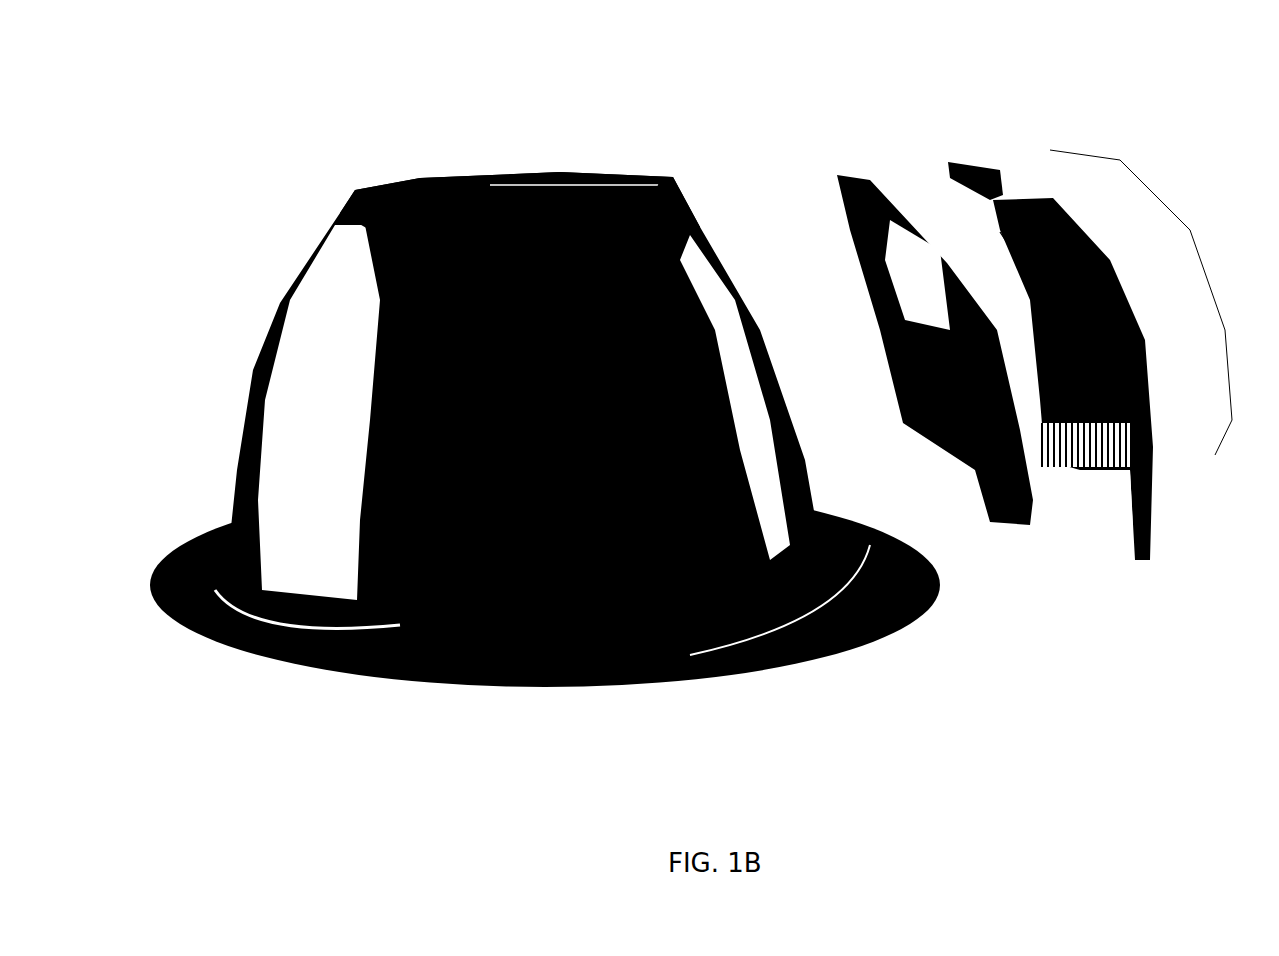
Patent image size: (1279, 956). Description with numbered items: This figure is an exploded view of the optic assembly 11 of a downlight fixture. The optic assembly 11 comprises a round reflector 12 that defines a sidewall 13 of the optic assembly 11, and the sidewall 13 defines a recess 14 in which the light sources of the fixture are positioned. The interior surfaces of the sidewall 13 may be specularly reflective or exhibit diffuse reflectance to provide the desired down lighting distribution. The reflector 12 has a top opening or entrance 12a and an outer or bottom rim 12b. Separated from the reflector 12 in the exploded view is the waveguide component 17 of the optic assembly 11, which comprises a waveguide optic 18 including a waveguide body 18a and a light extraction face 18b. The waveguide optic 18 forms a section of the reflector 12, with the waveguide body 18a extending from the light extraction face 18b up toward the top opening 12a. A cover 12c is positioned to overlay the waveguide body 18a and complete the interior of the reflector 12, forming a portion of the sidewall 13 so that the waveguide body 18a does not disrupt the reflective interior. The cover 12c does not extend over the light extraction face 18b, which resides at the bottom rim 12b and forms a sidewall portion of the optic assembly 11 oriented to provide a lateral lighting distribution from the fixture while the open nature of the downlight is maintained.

The optic assembly 11 is at (440, 96).
The round reflector 12 is at (272, 322).
The top opening or entrance of the reflector 12a is at (418, 186).
The outer or bottom rim of the reflector 12b is at (487, 658).
The cover 12c is at (857, 180).
The sidewall 13 is at (532, 220).
The recess 14 is at (665, 176).
The waveguide component 17 is at (1050, 140).
The waveguide optic 18 is at (1112, 250).
The waveguide body 18a is at (1024, 316).
The light extraction face 18b is at (1080, 463).